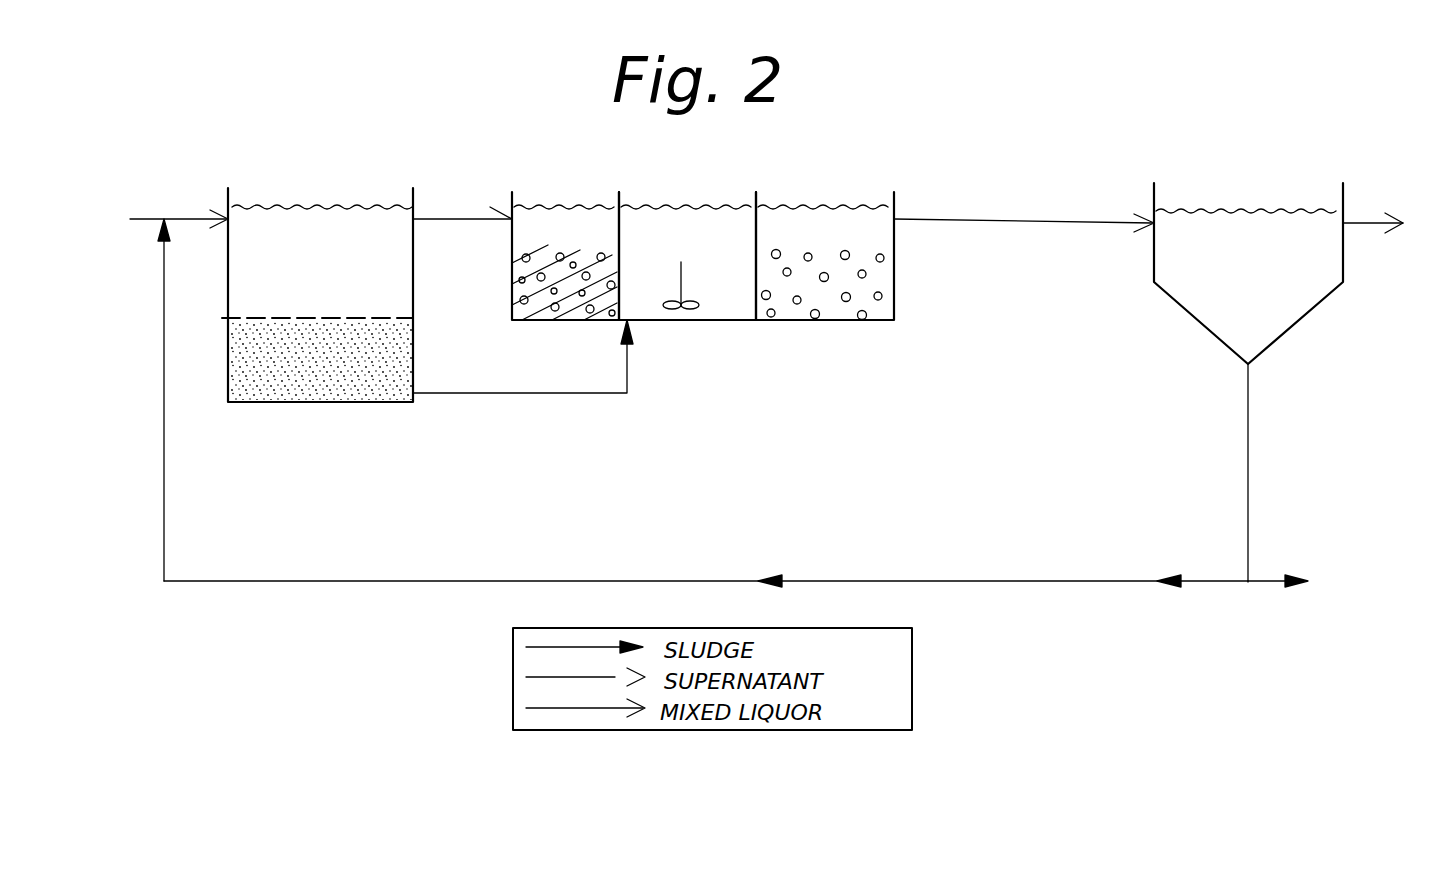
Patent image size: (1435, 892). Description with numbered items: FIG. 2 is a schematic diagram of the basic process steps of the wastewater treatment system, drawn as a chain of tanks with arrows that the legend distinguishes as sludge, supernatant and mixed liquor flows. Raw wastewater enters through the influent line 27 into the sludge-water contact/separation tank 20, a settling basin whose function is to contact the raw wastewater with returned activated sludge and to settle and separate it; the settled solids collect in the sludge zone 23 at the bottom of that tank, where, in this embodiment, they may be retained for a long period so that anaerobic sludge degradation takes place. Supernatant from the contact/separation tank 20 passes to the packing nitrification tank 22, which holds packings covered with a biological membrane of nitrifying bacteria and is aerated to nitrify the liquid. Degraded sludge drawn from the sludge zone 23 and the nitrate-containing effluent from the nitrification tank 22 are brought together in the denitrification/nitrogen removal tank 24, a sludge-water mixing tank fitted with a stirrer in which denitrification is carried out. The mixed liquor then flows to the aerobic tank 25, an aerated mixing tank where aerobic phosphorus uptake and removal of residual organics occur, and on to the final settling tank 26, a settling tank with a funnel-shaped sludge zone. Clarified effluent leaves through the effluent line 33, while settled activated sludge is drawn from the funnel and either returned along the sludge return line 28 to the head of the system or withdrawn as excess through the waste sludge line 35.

The anaerobic digester / first tank 20 is at (345, 272).
The first aeration tank 22 is at (588, 246).
The sludge layer 23 is at (300, 383).
The mixing tank 24 is at (714, 246).
The aeration tank 25 is at (850, 246).
The clarifier 26 is at (1275, 255).
The influent line 27 is at (153, 219).
The sludge return line 28 is at (845, 581).
The effluent line 33 is at (1363, 223).
The waste sludge line 35 is at (1282, 581).